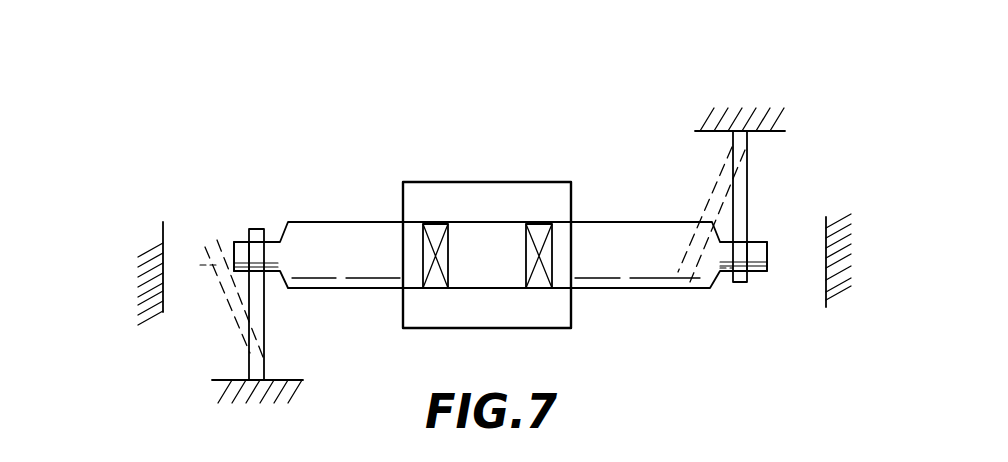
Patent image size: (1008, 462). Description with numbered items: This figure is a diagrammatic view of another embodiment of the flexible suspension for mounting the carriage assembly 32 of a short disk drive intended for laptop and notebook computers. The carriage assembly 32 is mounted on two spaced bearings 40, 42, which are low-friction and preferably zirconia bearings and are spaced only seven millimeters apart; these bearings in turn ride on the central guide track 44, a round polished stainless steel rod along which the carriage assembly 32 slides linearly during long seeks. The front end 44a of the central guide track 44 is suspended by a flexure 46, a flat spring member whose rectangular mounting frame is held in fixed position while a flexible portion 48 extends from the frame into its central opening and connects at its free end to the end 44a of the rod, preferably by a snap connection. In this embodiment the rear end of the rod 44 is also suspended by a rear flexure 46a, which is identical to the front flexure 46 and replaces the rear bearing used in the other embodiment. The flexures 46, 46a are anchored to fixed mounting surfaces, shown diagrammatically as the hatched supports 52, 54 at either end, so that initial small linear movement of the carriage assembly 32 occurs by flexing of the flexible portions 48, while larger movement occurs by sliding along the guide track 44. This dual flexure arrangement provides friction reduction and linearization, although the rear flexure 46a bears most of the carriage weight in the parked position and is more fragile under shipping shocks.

The carriage assembly 32 is at (418, 187).
The bearing 40 is at (536, 228).
The bearing 42 is at (435, 225).
The central guide track 44 is at (618, 283).
The front end of the central guide track 44a is at (243, 242).
The flexure 46 is at (165, 143).
The rear flexure 46a is at (671, 117).
The flexible portion 48 is at (237, 307).
The wall / mounting surface 52 is at (140, 297).
The wall / mounting surface 54 is at (840, 248).